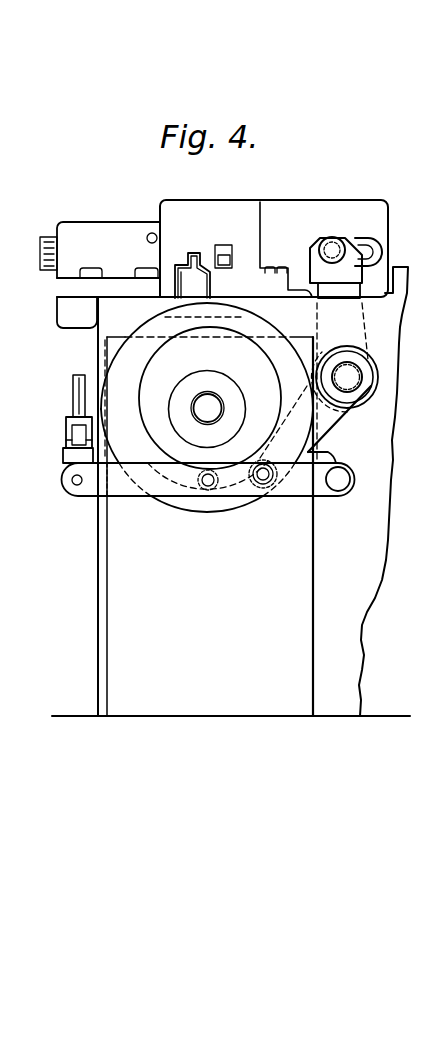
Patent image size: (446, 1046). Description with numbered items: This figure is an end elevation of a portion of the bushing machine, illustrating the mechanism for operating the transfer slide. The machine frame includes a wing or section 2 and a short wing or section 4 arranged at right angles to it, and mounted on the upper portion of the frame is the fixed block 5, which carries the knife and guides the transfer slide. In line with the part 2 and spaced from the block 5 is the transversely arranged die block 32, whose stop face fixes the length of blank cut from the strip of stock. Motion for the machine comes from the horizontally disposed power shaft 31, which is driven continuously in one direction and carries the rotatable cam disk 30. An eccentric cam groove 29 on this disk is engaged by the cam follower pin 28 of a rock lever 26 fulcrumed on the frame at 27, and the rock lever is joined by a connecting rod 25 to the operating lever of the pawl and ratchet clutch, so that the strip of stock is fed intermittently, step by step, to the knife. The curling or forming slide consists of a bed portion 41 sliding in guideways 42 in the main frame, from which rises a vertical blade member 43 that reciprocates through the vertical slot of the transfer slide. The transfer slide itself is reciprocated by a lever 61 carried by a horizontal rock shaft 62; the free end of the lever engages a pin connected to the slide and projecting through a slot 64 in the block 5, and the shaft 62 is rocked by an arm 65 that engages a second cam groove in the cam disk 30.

The wing or section 2 is at (362, 628).
The short wing or section 4 is at (293, 600).
The fixed block 5 is at (240, 207).
The connecting rod 25 is at (72, 398).
The rock lever 26 is at (430, 496).
The fulcrum 27 is at (125, 492).
The cam follower pin 28 is at (208, 487).
The eccentric cam groove 29 is at (152, 382).
The cam disk 30 is at (150, 330).
The power shaft 31 is at (208, 410).
The die block 32 is at (105, 229).
The bed portion 41 is at (192, 281).
The guideways 42 is at (245, 300).
The vertical blade member 43 is at (200, 254).
The lever 61 is at (355, 328).
The horizontal rock shaft 62 is at (349, 377).
The slot 64 is at (376, 250).
The arm 65 is at (330, 416).